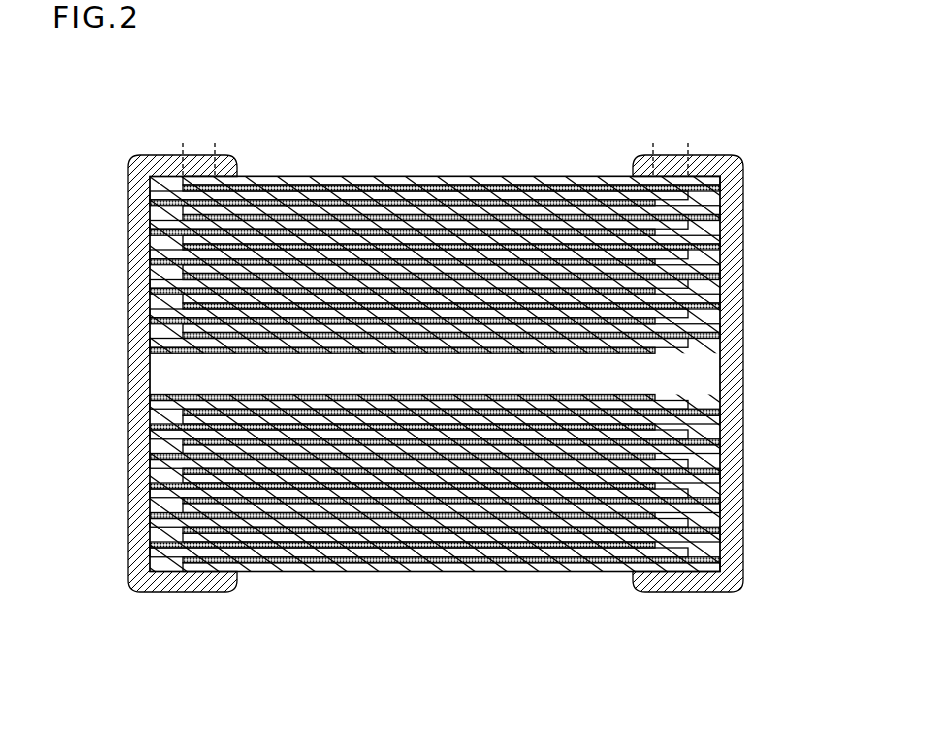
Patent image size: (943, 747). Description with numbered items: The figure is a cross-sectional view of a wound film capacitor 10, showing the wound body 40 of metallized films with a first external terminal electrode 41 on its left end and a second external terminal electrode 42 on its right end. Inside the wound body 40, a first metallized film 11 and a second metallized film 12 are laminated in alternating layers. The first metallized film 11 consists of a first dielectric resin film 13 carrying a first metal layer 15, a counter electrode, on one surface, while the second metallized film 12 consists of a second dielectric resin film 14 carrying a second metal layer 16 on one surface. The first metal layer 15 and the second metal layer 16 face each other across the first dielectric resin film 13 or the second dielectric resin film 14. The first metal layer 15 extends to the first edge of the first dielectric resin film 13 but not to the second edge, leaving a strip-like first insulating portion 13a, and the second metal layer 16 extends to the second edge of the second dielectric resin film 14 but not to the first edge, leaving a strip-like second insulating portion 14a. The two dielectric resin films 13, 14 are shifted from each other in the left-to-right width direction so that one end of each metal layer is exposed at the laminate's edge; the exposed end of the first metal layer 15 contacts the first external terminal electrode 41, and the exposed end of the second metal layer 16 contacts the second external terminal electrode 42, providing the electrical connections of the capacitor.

The film capacitor 10 is at (104, 130).
The first metallized film 11 is at (255, 101).
The second metallized film 12 is at (505, 101).
The first dielectric resin film 13 is at (305, 195).
The first insulating portion 13a is at (653, 143).
The second dielectric resin film 14 is at (552, 188).
The second insulating portion 14a is at (183, 143).
The first metal layer 15 is at (249, 200).
The second metal layer 16 is at (616, 182).
The wound body of metallized films 40 is at (408, 572).
The first external terminal electrode 41 is at (127, 225).
The second external terminal electrode 42 is at (733, 230).